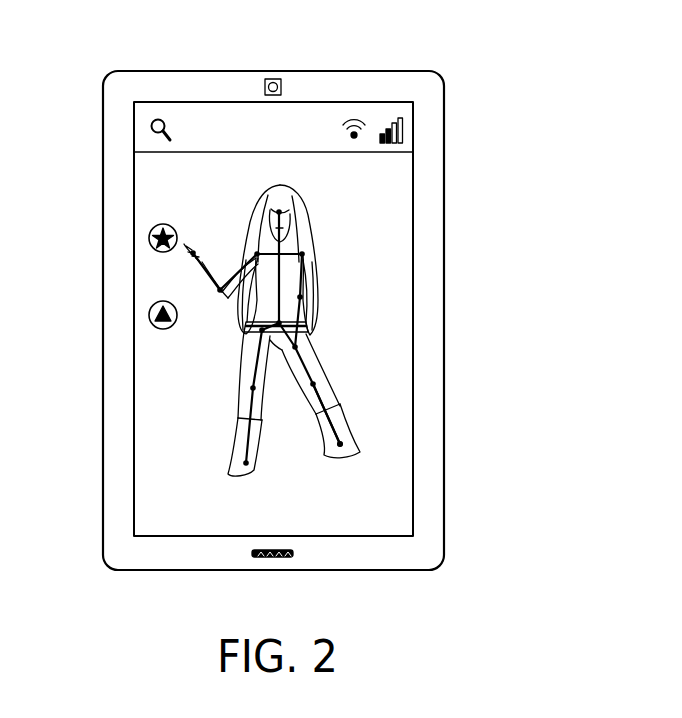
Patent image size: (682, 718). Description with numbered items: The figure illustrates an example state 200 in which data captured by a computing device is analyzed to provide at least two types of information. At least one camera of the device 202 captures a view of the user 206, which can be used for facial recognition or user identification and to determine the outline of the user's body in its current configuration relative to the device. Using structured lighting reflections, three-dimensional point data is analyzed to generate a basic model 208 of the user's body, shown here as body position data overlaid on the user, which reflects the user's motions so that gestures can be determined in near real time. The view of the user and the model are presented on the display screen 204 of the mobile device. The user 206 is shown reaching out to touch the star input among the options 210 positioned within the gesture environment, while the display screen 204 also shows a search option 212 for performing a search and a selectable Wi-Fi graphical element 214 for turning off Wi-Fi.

The example state 200 is at (624, 131).
The device 202 is at (118, 71).
The display screen 204 is at (213, 101).
The user 206 is at (390, 282).
The model of the body of the user 208 is at (333, 417).
The options 210 is at (149, 242).
The search option 212 is at (150, 126).
The selectable Wi-Fi graphical element 214 is at (354, 122).